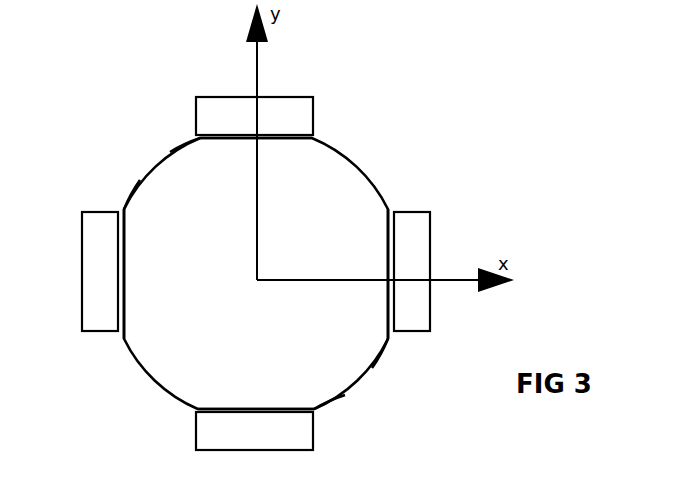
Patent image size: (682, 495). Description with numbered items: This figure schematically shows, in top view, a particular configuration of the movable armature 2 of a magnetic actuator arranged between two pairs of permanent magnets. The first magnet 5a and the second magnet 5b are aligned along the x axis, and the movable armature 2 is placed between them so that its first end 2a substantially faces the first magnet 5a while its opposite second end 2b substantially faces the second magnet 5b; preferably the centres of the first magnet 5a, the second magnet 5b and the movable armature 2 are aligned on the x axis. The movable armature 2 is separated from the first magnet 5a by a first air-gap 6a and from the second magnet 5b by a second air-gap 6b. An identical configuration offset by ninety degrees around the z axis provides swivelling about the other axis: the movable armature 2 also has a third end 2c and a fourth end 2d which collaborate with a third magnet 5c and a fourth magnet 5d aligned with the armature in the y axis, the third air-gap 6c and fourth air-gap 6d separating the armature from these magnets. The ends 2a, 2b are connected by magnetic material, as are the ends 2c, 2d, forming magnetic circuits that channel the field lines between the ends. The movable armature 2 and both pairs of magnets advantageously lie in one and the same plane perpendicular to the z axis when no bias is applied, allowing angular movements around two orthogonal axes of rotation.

The movable armature 2 is at (300, 316).
The first end 2a is at (142, 268).
The second end 2b is at (369, 258).
The third end 2c is at (248, 393).
The fourth end 2d is at (285, 163).
The first magnet 5a is at (97, 212).
The second magnet 5b is at (409, 212).
The third magnet 5c is at (248, 438).
The fourth magnet 5d is at (313, 118).
The first air-gap 6a is at (123, 198).
The second air-gap 6b is at (395, 350).
The third air-gap 6c is at (328, 413).
The fourth air-gap 6d is at (176, 133).